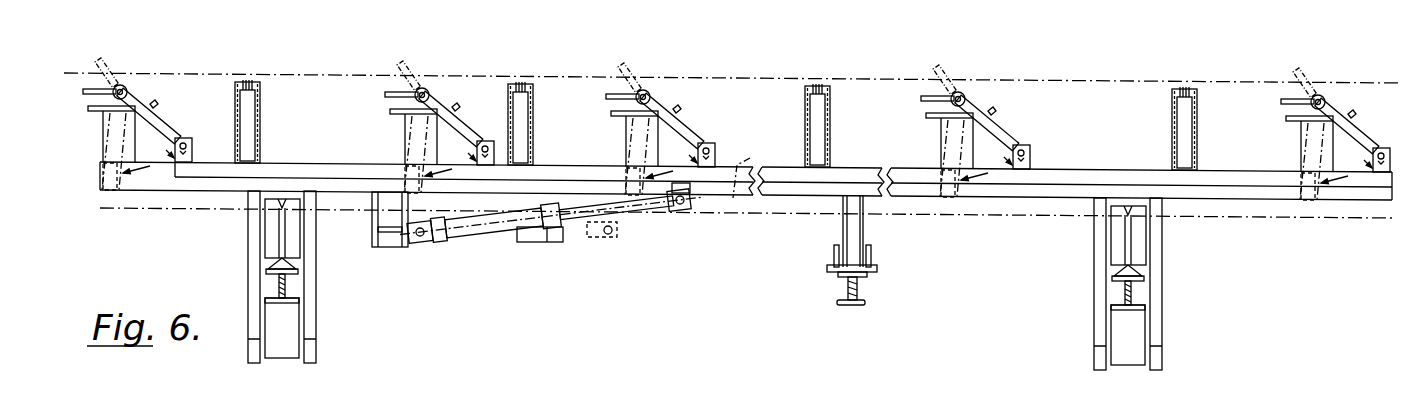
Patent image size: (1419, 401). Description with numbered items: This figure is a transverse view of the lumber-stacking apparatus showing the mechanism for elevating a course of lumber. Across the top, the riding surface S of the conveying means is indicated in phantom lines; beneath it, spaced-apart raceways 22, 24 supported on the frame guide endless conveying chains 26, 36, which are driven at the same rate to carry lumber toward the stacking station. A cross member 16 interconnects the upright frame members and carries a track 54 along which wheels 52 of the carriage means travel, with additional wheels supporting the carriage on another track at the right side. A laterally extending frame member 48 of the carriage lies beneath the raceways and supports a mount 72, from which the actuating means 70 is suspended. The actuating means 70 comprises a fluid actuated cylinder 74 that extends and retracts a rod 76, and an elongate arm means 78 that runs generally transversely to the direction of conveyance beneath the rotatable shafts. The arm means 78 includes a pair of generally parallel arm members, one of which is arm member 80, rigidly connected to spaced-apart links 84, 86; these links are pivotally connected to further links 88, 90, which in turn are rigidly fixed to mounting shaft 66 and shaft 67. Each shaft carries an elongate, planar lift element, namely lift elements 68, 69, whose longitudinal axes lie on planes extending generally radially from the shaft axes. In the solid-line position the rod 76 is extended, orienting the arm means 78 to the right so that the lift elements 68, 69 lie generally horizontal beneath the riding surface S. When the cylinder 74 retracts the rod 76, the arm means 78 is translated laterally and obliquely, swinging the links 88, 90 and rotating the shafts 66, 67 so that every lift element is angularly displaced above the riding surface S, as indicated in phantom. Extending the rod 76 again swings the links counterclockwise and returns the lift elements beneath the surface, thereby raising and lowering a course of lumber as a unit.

The riding surface S is at (713, 78).
The cross member 16 is at (248, 286).
The raceway 22 is at (267, 122).
The raceway 24 is at (544, 124).
The conveying chain 26 is at (267, 66).
The conveying chain 36 is at (539, 67).
The frame member 48 is at (100, 148).
The wheel 52 is at (256, 228).
The track 54 is at (255, 261).
The mounting shaft 66 is at (141, 88).
The shaft 67 is at (445, 90).
The lift element 68 is at (93, 57).
The lift element 69 is at (391, 66).
The actuating means 70 is at (495, 262).
The mount 72 is at (372, 225).
The fluid actuated cylinder 74 is at (512, 240).
The rod 76 is at (647, 225).
The arm means 78 is at (780, 160).
The arm member 80 is at (753, 168).
The link 84 is at (147, 175).
The link 86 is at (431, 150).
The link 88 is at (158, 151).
The link 90 is at (460, 153).